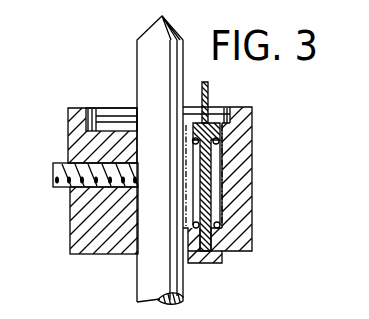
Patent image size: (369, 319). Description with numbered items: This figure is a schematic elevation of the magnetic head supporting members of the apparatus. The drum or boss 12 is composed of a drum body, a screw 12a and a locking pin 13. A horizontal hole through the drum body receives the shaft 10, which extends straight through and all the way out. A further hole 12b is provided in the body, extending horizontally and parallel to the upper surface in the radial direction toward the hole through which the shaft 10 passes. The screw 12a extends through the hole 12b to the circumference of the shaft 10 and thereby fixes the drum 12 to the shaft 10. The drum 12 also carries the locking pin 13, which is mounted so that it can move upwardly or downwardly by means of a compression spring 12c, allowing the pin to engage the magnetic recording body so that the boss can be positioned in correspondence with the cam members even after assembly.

The shaft 10 is at (137, 58).
The drum or boss 12 is at (255, 197).
The screw 12a is at (55, 178).
The hole 12b is at (93, 157).
The compression spring 12c is at (226, 147).
The locking pin 13 is at (209, 91).